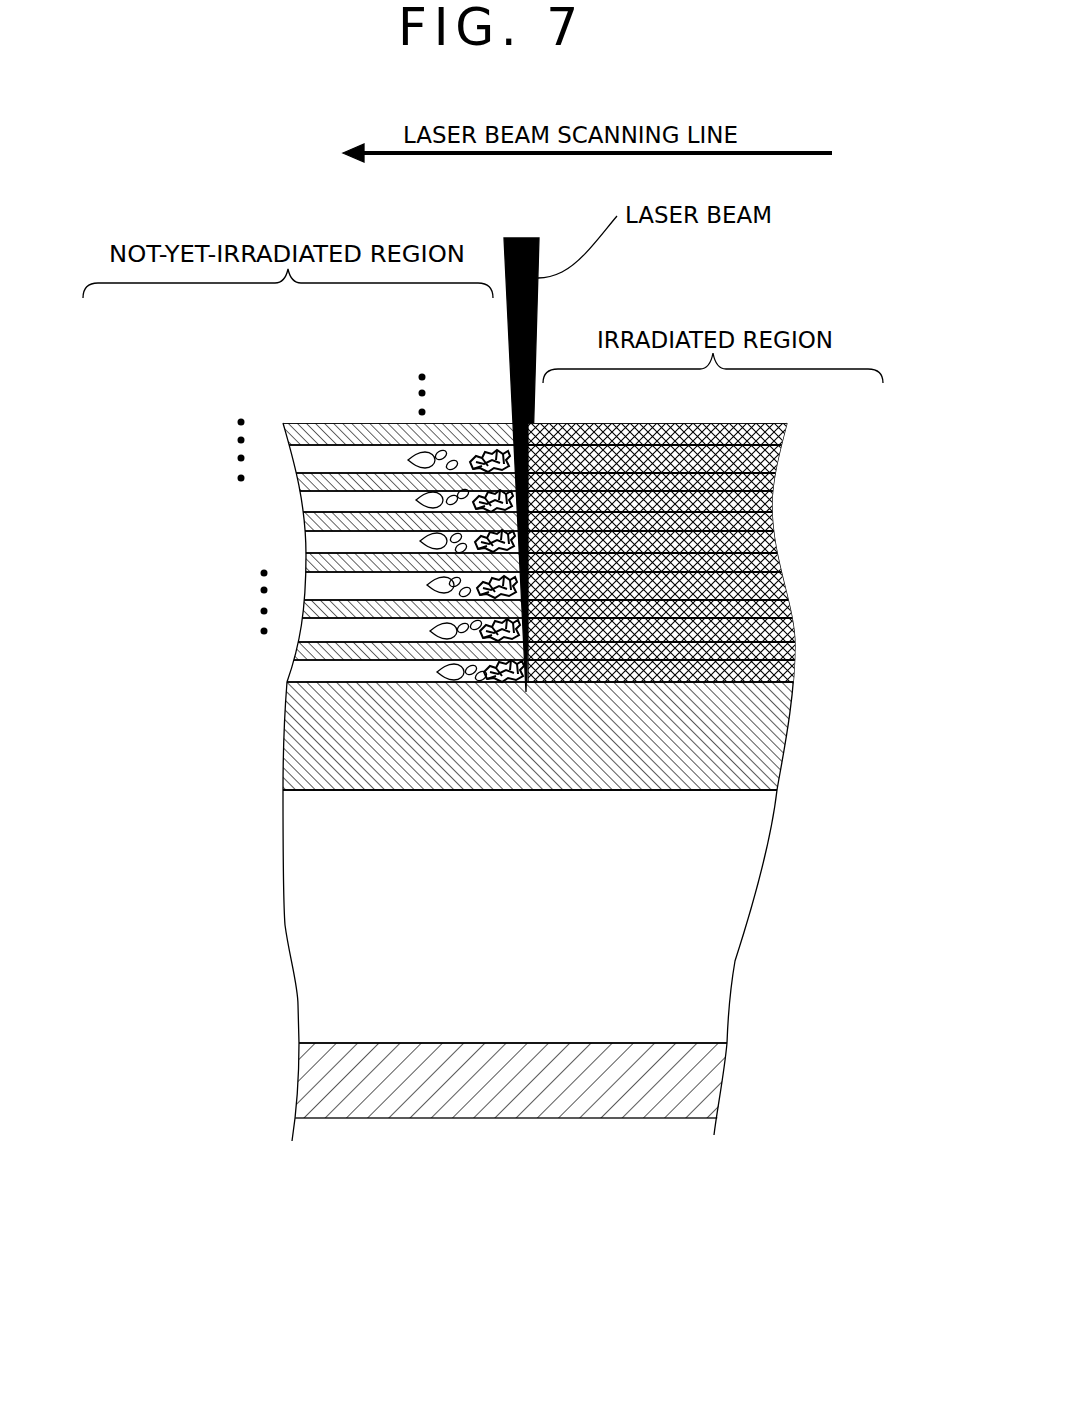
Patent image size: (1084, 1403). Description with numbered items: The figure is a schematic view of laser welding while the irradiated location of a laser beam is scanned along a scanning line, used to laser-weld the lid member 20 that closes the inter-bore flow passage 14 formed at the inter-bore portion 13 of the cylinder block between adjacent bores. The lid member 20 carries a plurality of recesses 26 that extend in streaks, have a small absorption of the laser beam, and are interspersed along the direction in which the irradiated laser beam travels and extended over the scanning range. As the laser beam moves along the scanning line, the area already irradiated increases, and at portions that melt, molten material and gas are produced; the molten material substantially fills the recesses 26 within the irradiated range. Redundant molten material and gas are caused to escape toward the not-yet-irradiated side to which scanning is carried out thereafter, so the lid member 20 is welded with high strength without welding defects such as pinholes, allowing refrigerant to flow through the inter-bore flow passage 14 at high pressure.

The inter-bore portion 13 is at (514, 1108).
The inter-bore flow passage 14 is at (666, 969).
The lid member 20 is at (742, 748).
The recesses 26 is at (308, 631).
The metal grains MG is at (416, 500).
The molten metal ML is at (475, 500).